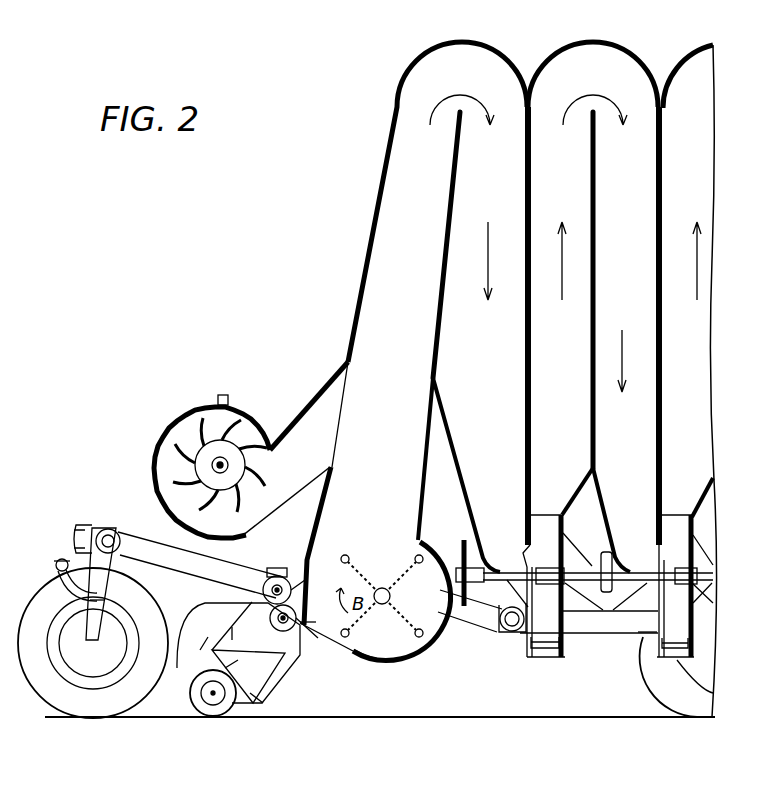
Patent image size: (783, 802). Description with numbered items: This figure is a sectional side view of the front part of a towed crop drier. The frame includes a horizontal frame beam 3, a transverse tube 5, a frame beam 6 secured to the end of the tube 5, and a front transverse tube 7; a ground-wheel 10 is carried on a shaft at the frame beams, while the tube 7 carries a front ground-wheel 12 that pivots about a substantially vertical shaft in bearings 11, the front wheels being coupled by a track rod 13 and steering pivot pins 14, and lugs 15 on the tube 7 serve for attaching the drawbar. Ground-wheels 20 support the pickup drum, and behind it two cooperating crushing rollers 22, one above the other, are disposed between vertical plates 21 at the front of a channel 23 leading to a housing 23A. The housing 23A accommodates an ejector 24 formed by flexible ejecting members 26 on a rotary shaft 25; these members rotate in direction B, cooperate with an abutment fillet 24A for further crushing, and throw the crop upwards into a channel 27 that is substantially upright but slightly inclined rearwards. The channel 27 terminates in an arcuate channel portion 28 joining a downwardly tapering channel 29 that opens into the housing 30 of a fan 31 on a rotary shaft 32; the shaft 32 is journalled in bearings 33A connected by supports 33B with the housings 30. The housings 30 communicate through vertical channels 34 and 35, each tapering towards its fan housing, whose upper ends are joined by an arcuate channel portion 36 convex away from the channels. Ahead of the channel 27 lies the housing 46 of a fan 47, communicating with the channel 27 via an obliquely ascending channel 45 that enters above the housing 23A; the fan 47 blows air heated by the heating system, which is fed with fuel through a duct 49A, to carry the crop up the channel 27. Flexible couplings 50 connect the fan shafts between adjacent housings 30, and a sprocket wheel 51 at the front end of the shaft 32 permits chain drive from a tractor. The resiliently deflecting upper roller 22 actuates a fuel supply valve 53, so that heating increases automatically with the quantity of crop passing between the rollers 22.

The frame beam 3 is at (638, 632).
The tube 5 is at (502, 628).
The frame beam 6 is at (180, 563).
The tube 7 is at (120, 538).
The ground-wheel 10 is at (667, 690).
The bearings 11 is at (100, 592).
The ground-wheel 12 is at (62, 712).
The track rod 13 is at (58, 561).
The steering pivot pins 14 is at (68, 590).
The lugs 15 is at (90, 528).
The ground-wheels 20 is at (214, 715).
The vertical plates 21 is at (313, 655).
The crushing rollers 22 is at (263, 590).
The channel 23 is at (292, 645).
The housing 23A is at (397, 657).
The ejector 24 is at (388, 644).
The abutment fillet 24A is at (317, 565).
The rotary shaft 25 is at (391, 585).
The flexible ejecting members 26 is at (391, 587).
The channel 27 is at (368, 250).
The channel portion 28 is at (466, 46).
The channel 29 is at (511, 88).
The housing 30 is at (550, 652).
The fan 31 is at (540, 517).
The rotary shaft 32 is at (522, 572).
The bearings 33A is at (598, 598).
The supports 33B is at (575, 632).
The vertical channel 34 is at (569, 316).
The vertical channel 35 is at (633, 286).
The channel portion 36 is at (598, 50).
The channel 45 is at (330, 392).
The housing 46 is at (180, 415).
The fan 47 is at (262, 480).
The duct 49A is at (228, 400).
The flexible coupling 50 is at (608, 552).
The sprocket wheel 51 is at (467, 556).
The supply valve 53 is at (265, 575).